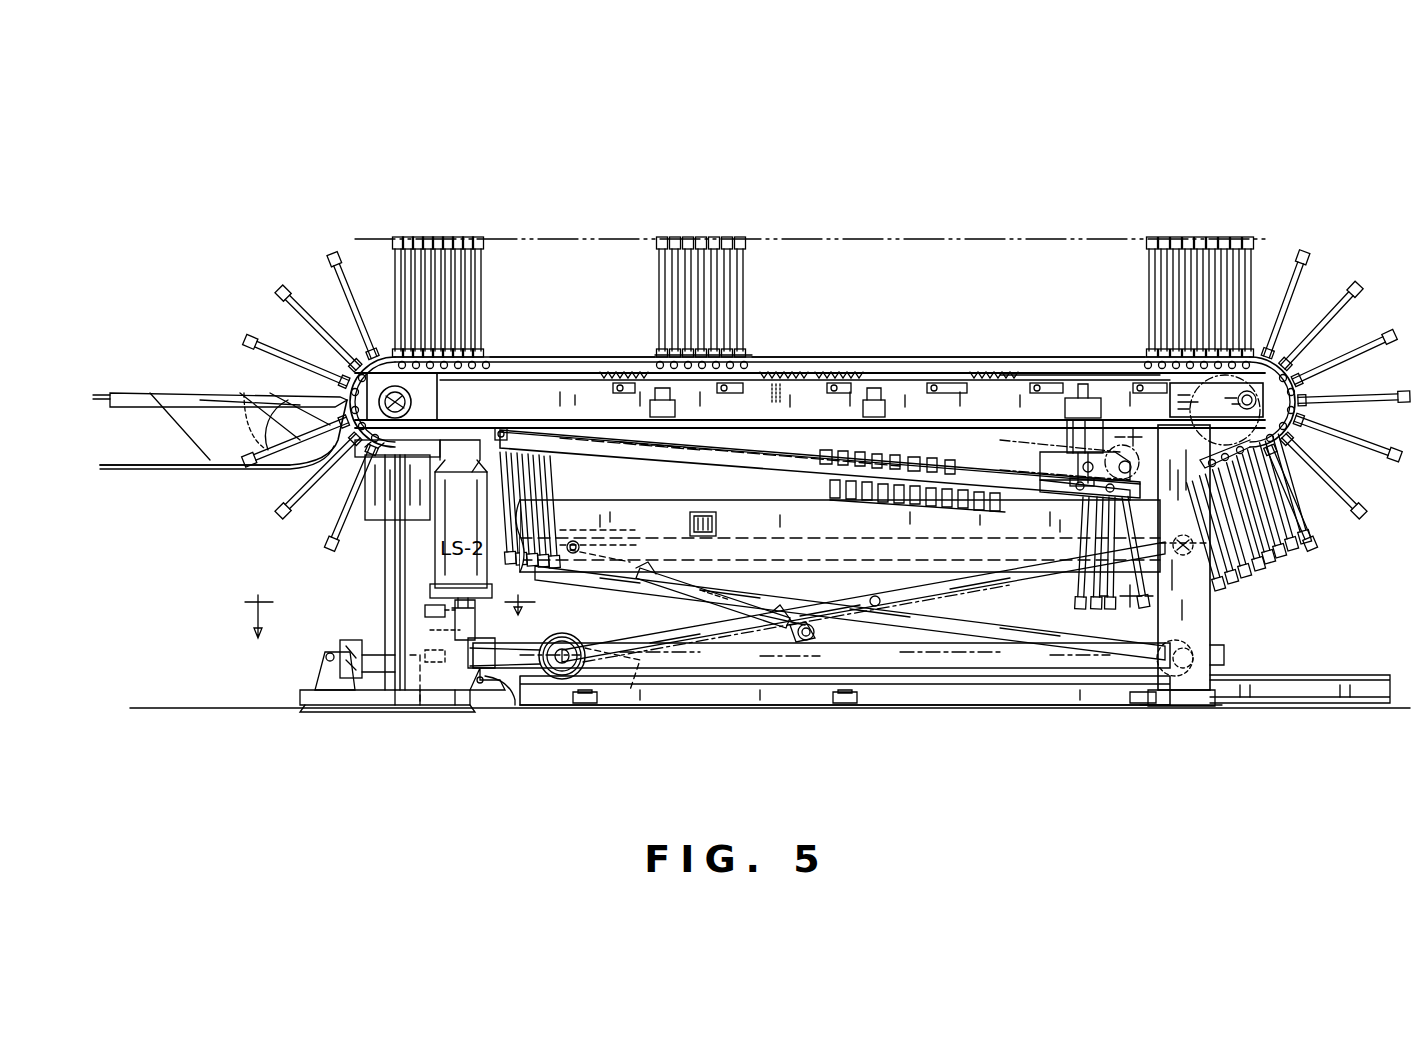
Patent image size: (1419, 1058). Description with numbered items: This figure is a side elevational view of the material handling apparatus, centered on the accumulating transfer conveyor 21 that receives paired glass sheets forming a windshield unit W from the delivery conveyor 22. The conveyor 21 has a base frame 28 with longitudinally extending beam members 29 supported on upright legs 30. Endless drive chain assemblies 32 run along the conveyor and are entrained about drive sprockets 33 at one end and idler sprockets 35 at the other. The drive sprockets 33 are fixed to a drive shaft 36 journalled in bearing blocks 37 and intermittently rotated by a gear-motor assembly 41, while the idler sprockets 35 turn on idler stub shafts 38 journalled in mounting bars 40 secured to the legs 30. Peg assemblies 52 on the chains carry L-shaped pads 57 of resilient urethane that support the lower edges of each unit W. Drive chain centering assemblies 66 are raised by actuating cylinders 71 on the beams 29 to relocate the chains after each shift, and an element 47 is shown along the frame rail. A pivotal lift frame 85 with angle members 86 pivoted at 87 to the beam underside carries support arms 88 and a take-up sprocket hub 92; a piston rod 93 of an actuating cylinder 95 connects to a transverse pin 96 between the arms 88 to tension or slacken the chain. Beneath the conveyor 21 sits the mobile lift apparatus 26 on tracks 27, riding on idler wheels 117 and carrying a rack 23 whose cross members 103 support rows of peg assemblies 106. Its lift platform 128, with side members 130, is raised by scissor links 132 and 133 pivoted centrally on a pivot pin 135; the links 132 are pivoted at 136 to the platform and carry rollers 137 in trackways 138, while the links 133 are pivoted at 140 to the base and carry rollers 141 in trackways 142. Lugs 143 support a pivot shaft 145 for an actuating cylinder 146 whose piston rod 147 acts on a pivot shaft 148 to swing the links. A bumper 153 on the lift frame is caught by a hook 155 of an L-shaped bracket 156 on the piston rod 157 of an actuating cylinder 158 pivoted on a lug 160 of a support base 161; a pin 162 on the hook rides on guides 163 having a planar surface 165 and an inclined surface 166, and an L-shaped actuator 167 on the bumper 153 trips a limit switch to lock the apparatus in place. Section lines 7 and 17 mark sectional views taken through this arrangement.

The accumulating transfer conveyor 21 is at (1207, 160).
The delivery conveyor 22 is at (160, 470).
The rack 23 is at (925, 628).
The mobile lift apparatus 26 is at (905, 676).
The tracks 27 is at (1330, 678).
The base frame 28 is at (378, 537).
The beam members 29 is at (605, 390).
The legs 30 is at (385, 590).
The drive chain assemblies 32 is at (495, 356).
The drive sprockets 33 is at (395, 355).
The idler sprockets 35 is at (1252, 355).
The drive shaft 36 is at (362, 375).
The bearing blocks 37 is at (412, 402).
The idler stub shafts 38 is at (1285, 440).
The mounting bars 40 is at (1238, 402).
The gear-motor assembly 41 is at (405, 545).
The frame rail 47 is at (1083, 372).
The peg assembly 52 is at (493, 268).
The L-shaped pad 57 is at (1318, 385).
The drive chain centering assemblies 66 is at (640, 358).
The actuating cylinder 71 is at (862, 408).
The pivotal lift frame 85 is at (818, 456).
The angle members 86 is at (768, 472).
The pivot 87 is at (503, 428).
The support arms 88 is at (1050, 475).
The hub 92 is at (1140, 455).
The piston rod 93 is at (1078, 462).
The actuating cylinder 95 is at (1082, 425).
The transverse pin 96 is at (1080, 490).
The cross members 103 is at (700, 536).
The peg assemblies 106 is at (826, 489).
The idler wheels 117 is at (565, 680).
The lift platform 128 is at (740, 528).
The side members 130 is at (790, 545).
The scissor links 132 is at (1000, 588).
The scissor links 133 is at (955, 640).
The pivot pin 135 is at (876, 596).
The pivotal mounting 136 is at (1188, 556).
The rollers 137 is at (580, 642).
The trackways 138 is at (622, 690).
The pivotal mounting 140 is at (1183, 670).
The rollers 141 is at (548, 500).
The trackways 142 is at (583, 508).
The lugs 143 is at (818, 634).
The pivot shaft 145 is at (803, 645).
The actuating cylinder 146 is at (715, 600).
The piston rod 147 is at (640, 555).
The pivot shaft 148 is at (620, 520).
The bumper 153 is at (500, 652).
The hook 155 is at (500, 690).
The L-shaped bracket 156 is at (418, 705).
The piston rod 157 is at (412, 690).
The actuating cylinder 158 is at (365, 690).
The lug 160 is at (338, 668).
The support base 161 is at (308, 698).
The pin 162 is at (478, 690).
The guides 163 is at (462, 700).
The planar surface 165 is at (446, 690).
The inclined surface 166 is at (492, 690).
The L-shaped actuator 167 is at (455, 637).
The section line 7 is at (1128, 517).
The section line 17 is at (382, 607).
The windshield unit W is at (138, 380).